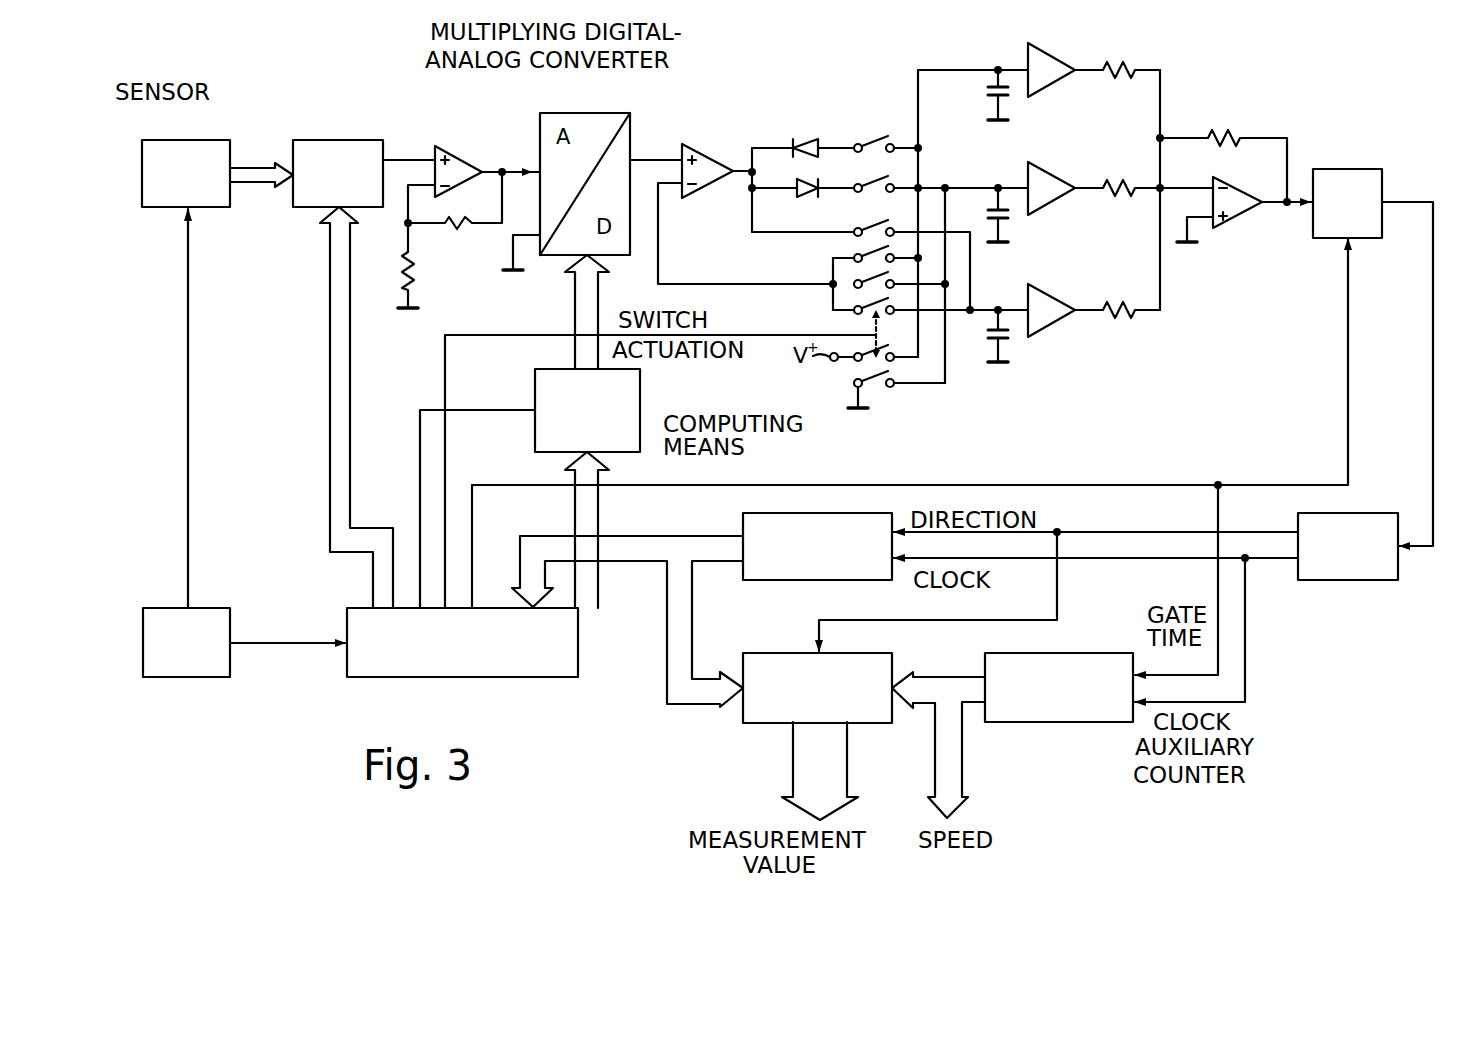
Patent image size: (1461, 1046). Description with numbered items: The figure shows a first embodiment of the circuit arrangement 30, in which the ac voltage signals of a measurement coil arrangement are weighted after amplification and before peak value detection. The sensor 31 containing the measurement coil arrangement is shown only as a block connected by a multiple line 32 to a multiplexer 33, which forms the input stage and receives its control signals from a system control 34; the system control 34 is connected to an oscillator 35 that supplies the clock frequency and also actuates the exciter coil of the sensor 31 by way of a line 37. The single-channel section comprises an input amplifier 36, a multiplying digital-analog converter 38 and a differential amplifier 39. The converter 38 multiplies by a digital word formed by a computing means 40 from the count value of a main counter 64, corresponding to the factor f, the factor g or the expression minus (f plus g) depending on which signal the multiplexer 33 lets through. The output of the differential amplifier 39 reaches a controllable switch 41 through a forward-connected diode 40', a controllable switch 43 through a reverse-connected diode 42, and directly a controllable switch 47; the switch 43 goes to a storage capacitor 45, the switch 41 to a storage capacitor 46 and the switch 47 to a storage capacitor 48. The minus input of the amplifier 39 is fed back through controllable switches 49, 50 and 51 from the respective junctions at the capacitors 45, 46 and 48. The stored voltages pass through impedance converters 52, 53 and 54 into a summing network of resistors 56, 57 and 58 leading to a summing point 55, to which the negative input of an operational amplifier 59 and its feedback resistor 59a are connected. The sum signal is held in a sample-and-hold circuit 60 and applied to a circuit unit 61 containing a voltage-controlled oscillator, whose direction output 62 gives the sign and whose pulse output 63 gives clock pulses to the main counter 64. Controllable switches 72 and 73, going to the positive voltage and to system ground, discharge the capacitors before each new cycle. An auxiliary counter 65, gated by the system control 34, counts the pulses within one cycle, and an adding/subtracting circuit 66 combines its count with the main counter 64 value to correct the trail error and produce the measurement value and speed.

The circuit arrangement 30 is at (765, 96).
The sensor 31 is at (188, 157).
The multiple line 32 is at (262, 165).
The multiplexer 33 is at (355, 150).
The system control 34 is at (535, 678).
The oscillator 35 is at (190, 678).
The input amplifier 36 is at (462, 172).
The line 37 is at (190, 418).
The digital-analog converter 38 is at (597, 130).
The differential amplifier 39 is at (707, 165).
The computing means 40 is at (611, 353).
The diode 40' is at (803, 202).
The controllable switch 41 is at (871, 180).
The diode 42 is at (812, 140).
The controllable switch 43 is at (876, 136).
The storage capacitor 45 is at (988, 92).
The storage capacitor 46 is at (1009, 215).
The controllable switch 47 is at (876, 222).
The storage capacitor 48 is at (1009, 335).
The controllable switch 49 is at (860, 253).
The controllable switch 50 is at (860, 279).
The controllable switch 51 is at (856, 303).
The impedance converter 52 is at (1048, 78).
The impedance converter 53 is at (1048, 194).
The impedance converter 54 is at (1055, 309).
The summing point 55 is at (1160, 192).
The resistor 56 is at (1118, 64).
The resistor 57 is at (1115, 182).
The resistor 58 is at (1115, 304).
The operational amplifier 59 is at (1241, 210).
The feedback resistor 59a is at (1222, 132).
The sample-and-hold circuit 60 is at (1368, 238).
The circuit unit 61 is at (1368, 580).
The direction output 62 is at (1273, 532).
The pulse output 63 is at (1262, 562).
The main counter 64 is at (790, 581).
The auxiliary counter 65 is at (1103, 723).
The adding/subtracting circuit 66 is at (765, 724).
The controllable switch 72 is at (876, 360).
The controllable switch 73 is at (870, 387).